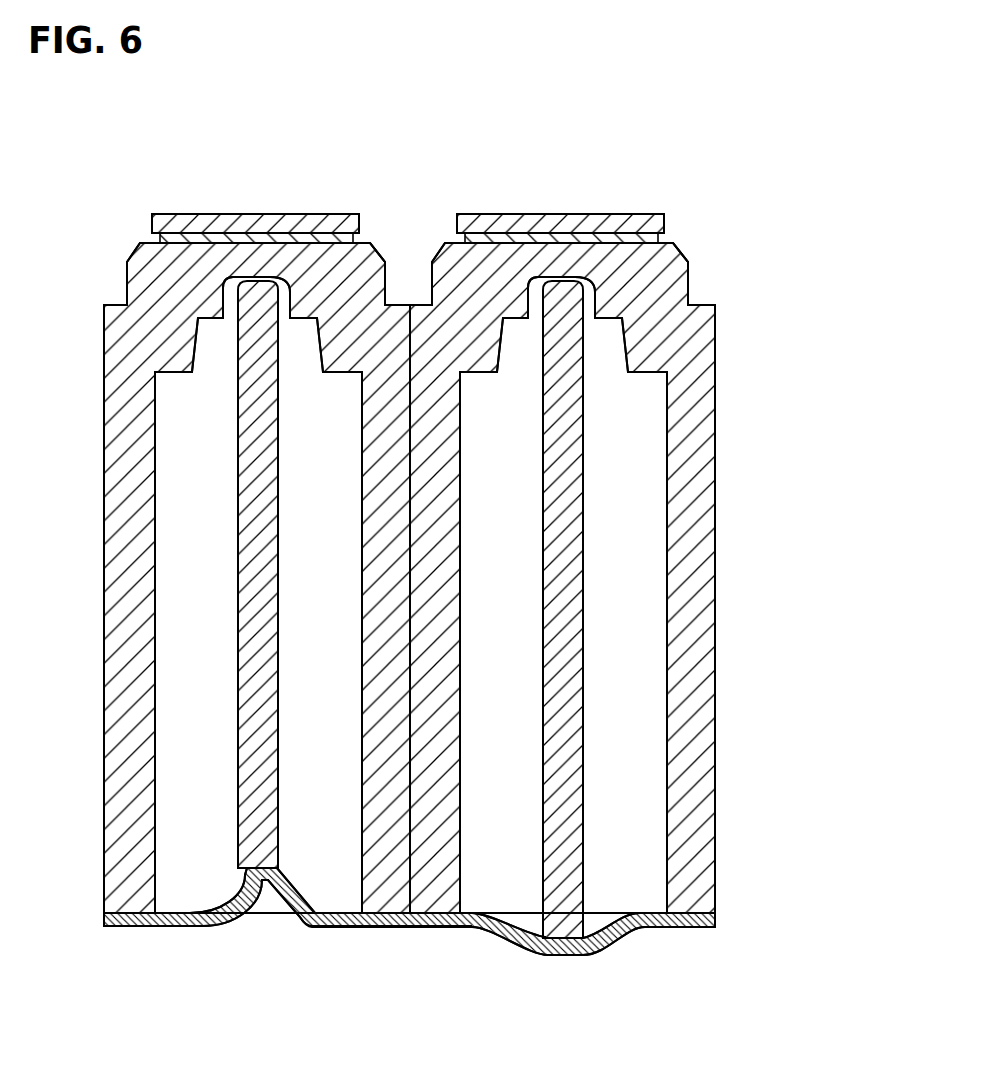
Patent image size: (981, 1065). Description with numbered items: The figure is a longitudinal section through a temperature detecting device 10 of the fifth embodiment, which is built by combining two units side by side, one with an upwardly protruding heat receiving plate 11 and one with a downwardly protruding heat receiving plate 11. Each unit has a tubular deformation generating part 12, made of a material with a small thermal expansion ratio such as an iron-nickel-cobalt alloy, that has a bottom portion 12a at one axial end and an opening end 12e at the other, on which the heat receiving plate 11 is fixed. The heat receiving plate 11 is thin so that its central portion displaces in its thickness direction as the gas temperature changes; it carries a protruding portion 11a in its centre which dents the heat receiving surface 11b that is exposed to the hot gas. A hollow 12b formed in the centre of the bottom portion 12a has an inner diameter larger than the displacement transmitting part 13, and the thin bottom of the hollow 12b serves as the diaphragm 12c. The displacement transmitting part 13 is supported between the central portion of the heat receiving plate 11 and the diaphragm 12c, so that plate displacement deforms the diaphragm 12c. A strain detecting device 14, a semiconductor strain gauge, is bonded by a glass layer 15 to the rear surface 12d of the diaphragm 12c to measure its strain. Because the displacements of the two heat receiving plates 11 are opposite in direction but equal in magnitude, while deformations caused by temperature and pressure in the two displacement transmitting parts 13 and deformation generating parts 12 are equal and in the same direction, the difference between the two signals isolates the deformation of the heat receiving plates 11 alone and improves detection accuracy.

The temperature detecting device 10 is at (670, 145).
The heat receiving plate 11 is at (318, 914).
The protruding portion 11a is at (232, 898).
The heat receiving surface 11b is at (178, 926).
The deformation generating part 12 is at (115, 502).
The bottom portion 12a is at (127, 270).
The hollow 12b is at (222, 310).
The diaphragm 12c is at (253, 262).
The rear surface 12d is at (362, 238).
The opening end 12e is at (383, 926).
The displacement transmitting part 13 is at (267, 433).
The strain detecting device 14 is at (315, 218).
The glass layer 15 is at (160, 237).